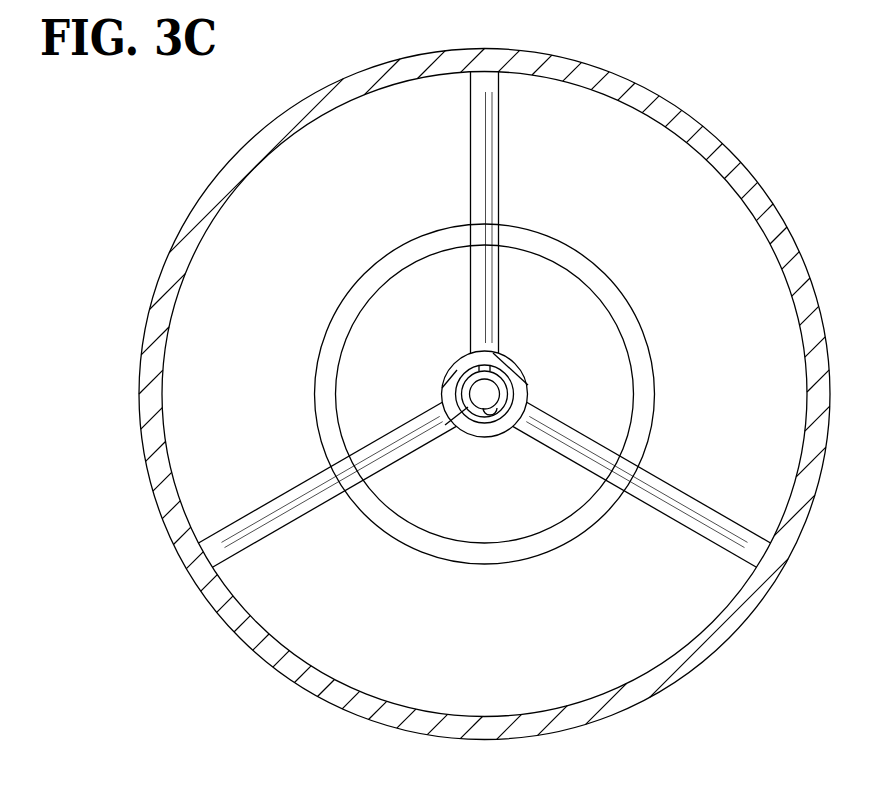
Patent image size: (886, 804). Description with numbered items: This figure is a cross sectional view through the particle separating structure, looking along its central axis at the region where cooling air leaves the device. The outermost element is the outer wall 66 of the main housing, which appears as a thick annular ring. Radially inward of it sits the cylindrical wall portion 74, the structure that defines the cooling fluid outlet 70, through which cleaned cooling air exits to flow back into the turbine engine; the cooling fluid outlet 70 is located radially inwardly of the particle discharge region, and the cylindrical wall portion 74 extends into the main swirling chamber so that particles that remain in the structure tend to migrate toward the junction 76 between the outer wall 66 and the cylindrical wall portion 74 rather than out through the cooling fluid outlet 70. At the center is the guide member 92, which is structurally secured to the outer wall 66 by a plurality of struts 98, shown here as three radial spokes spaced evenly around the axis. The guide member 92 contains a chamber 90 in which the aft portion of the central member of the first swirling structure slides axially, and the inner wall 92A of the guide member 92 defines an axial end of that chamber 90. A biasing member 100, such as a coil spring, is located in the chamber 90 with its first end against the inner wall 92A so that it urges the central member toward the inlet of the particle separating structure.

The outer wall 66 is at (707, 143).
The cooling fluid outlet 70 is at (388, 413).
The cylindrical wall portion 74 is at (517, 555).
The junction 76 is at (312, 385).
The chamber 90 is at (498, 412).
The guide member 92 is at (462, 372).
The inner wall 92A is at (487, 392).
The struts 98 is at (490, 192).
The biasing member 100 is at (465, 400).